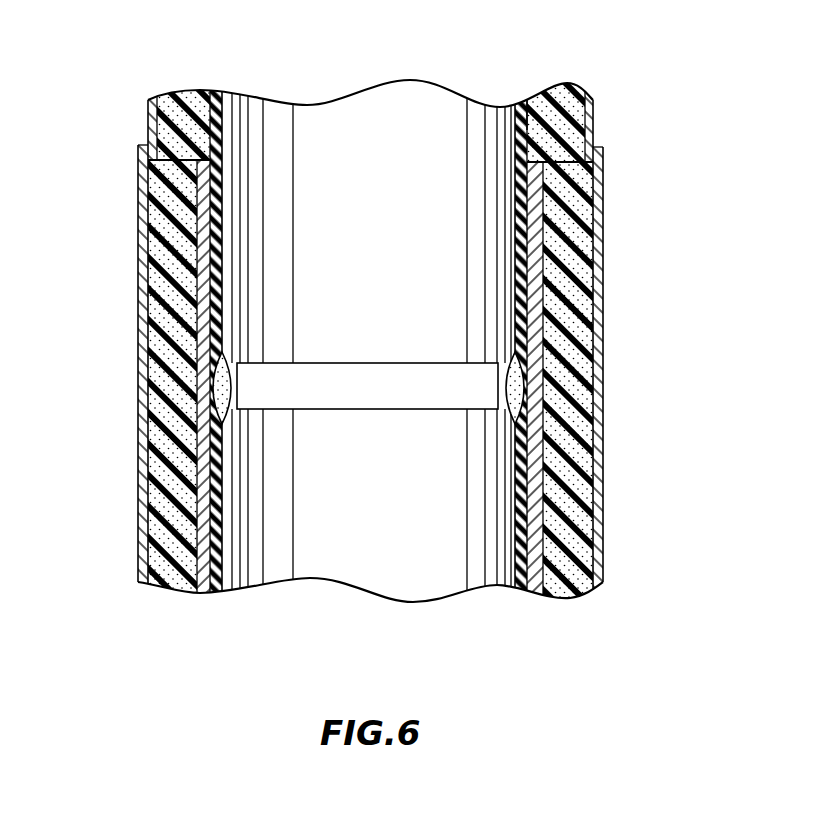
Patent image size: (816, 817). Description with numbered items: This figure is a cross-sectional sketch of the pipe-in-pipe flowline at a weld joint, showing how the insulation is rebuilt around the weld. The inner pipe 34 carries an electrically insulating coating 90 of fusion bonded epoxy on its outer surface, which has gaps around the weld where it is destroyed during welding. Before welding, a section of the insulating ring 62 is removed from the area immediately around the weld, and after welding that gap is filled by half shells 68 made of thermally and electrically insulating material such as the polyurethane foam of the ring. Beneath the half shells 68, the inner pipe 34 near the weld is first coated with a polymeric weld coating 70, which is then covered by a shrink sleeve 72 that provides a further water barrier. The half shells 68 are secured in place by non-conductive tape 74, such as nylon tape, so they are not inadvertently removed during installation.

The inner pipe 34 is at (515, 198).
The insulating ring 62 is at (595, 120).
The half shells 68 is at (160, 195).
The weld coating 70 is at (210, 227).
The shrink sleeve 72 is at (205, 522).
The tape 74 is at (600, 520).
The electrically insulating coating 90 is at (522, 121).